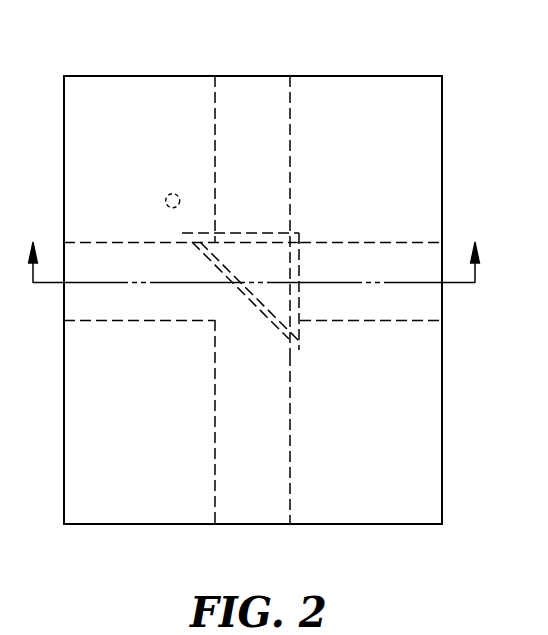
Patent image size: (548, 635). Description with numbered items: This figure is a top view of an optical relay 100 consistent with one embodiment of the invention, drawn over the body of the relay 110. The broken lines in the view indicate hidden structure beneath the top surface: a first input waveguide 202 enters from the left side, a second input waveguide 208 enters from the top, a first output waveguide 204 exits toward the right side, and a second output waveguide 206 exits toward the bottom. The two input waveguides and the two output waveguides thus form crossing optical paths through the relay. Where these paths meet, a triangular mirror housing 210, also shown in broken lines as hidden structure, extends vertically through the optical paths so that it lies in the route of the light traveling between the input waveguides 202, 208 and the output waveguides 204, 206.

The optical relay 100 is at (96, 38).
The substrate 110 is at (442, 447).
The first input waveguide 202 is at (77, 298).
The first output waveguide 204 is at (432, 297).
The second output waveguide 206 is at (253, 512).
The second input waveguide 208 is at (248, 90).
The triangular mirror housing 210 is at (246, 295).